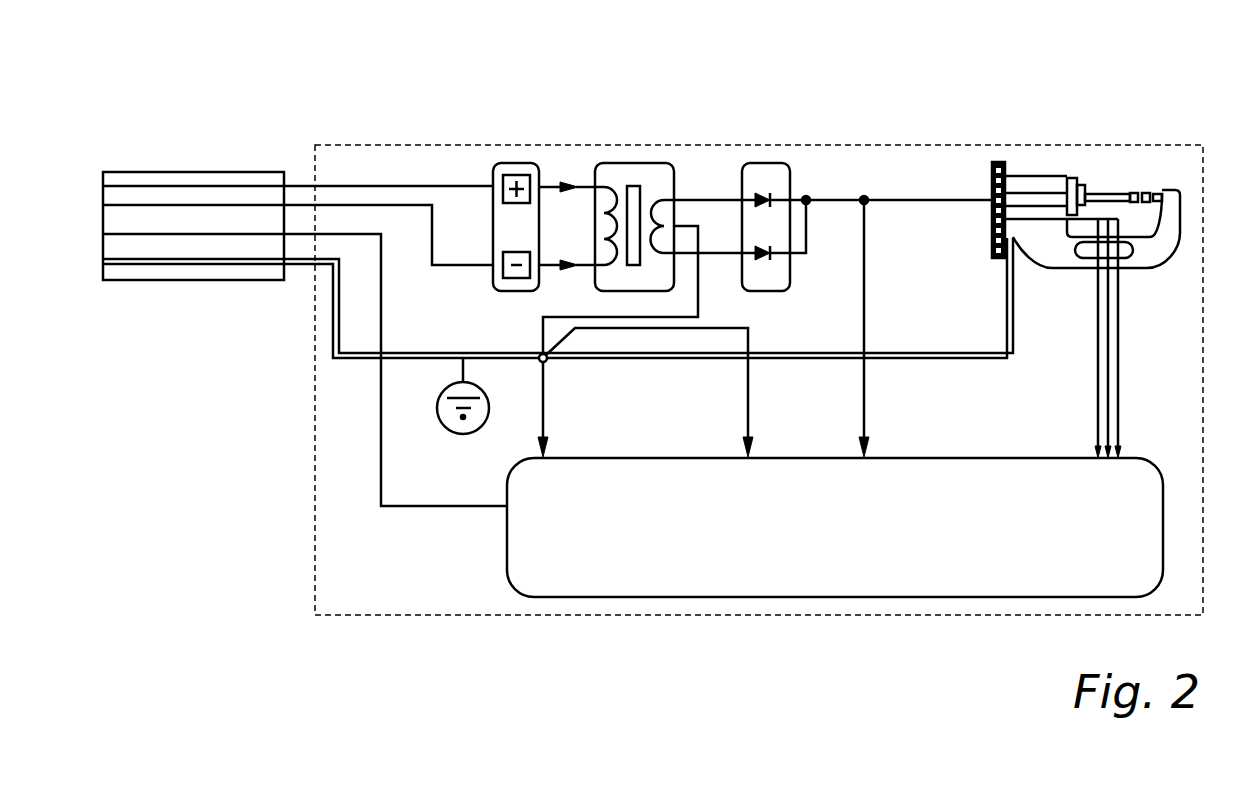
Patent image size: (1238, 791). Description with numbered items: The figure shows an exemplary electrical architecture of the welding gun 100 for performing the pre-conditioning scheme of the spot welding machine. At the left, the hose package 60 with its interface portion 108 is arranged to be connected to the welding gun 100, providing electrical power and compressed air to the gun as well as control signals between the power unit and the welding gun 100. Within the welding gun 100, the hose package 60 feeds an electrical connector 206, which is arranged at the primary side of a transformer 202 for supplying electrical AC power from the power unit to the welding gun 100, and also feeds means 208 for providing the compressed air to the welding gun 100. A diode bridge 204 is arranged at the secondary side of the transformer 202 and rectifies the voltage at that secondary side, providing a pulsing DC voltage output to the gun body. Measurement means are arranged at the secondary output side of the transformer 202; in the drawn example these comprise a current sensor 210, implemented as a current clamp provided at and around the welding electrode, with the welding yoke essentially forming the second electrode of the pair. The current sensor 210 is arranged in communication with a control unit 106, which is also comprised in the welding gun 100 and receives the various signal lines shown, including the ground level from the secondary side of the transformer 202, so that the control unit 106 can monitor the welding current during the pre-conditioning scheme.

The hose package 60 is at (193, 177).
The interface portion 108 is at (187, 233).
The electrical connector 206 is at (527, 163).
The transformer 202 is at (637, 163).
The diode bridge 204 is at (780, 163).
The welding gun 100 is at (1050, 197).
The current sensor 210 is at (1075, 178).
The means for providing compressed air 208 is at (332, 360).
The control unit 106 is at (713, 557).